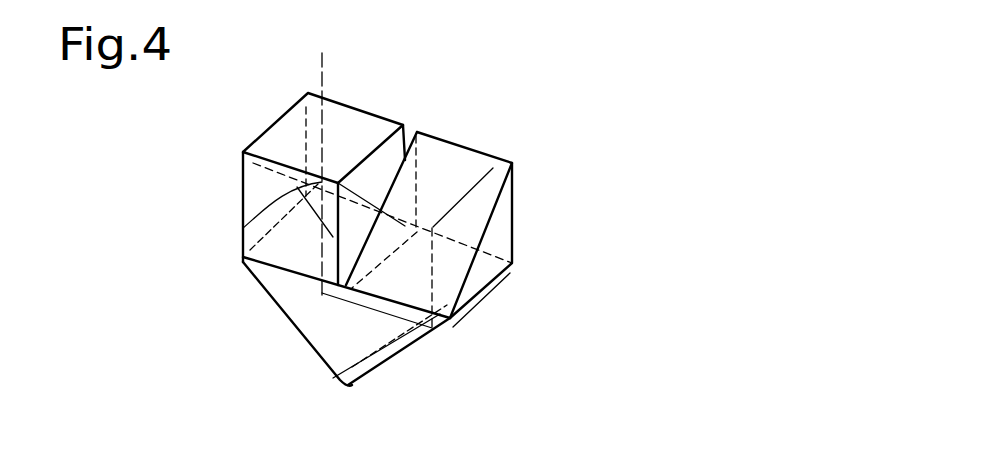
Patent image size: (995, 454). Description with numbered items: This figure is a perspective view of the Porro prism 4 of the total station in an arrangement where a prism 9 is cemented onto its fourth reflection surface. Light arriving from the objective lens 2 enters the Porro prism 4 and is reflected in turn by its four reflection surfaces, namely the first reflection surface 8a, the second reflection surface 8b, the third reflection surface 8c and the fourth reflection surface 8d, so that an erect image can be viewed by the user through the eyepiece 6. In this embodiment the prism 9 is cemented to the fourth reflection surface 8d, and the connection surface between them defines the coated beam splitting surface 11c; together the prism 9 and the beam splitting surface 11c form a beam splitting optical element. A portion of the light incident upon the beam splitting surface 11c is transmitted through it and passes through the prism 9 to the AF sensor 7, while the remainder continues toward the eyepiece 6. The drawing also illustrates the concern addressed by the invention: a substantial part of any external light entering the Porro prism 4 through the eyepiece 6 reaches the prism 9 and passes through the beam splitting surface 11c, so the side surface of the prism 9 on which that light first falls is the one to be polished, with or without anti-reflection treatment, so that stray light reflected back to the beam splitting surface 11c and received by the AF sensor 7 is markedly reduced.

The Porro prism 4 is at (391, 106).
The prism 9 is at (263, 133).
The fourth reflection surface 8d is at (273, 172).
The beam splitting surface 11c is at (243, 228).
The first reflection surface 8a is at (448, 163).
The second reflection surface 8b is at (420, 345).
The third reflection surface 8c is at (320, 325).
The AF sensor 7 is at (350, 85).
The objective lens 2 is at (523, 142).
The eyepiece 6 is at (243, 263).